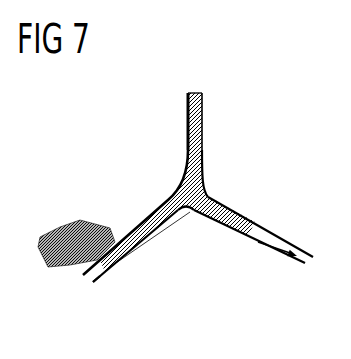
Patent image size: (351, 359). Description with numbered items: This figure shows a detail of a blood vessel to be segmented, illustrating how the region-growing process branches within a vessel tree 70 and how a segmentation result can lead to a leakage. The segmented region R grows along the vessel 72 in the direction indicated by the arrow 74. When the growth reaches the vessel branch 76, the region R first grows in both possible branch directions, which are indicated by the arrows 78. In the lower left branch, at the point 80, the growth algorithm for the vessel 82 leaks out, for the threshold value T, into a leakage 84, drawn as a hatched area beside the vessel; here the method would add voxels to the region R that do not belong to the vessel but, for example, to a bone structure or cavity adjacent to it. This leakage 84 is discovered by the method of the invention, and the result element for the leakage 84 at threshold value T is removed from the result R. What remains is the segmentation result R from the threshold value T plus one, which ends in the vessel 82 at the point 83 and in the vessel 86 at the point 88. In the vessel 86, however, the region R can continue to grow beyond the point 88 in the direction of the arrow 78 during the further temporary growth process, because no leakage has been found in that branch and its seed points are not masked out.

The vessel tree 70 is at (226, 117).
The vessel 72 is at (203, 158).
The arrow 74 is at (202, 102).
The vessel branch 76 is at (189, 210).
The arrows 78 is at (284, 231).
The point 80 is at (93, 284).
The vessel 82 is at (131, 238).
The point 83 is at (147, 208).
The leakage 84 is at (53, 234).
The vessel 86 is at (243, 222).
The point 88 is at (258, 243).